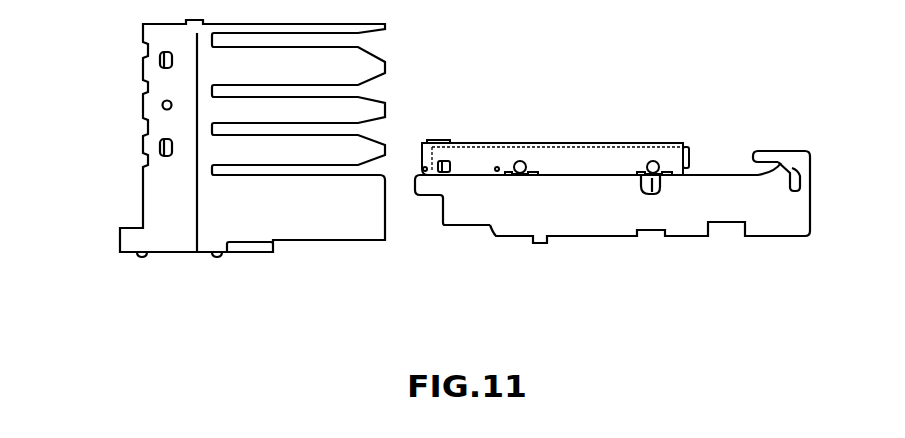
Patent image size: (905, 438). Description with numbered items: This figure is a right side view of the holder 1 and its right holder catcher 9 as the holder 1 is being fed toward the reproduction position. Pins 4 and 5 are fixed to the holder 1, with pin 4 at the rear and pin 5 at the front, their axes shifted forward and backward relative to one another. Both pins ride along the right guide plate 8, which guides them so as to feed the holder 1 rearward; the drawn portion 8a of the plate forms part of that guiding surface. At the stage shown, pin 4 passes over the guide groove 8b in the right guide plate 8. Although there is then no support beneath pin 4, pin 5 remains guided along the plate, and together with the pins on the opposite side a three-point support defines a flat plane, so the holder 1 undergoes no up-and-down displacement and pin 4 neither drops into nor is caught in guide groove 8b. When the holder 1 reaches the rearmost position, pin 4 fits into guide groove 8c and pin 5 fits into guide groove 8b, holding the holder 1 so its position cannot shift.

The holder 1 is at (690, 151).
The pin 4 is at (645, 160).
The pin 5 is at (513, 161).
The right guide plate 8 is at (573, 195).
The frame base portion 8a is at (474, 243).
The guide groove 8b is at (648, 187).
The guide groove 8c is at (794, 189).
The right holder catcher 9 is at (160, 88).